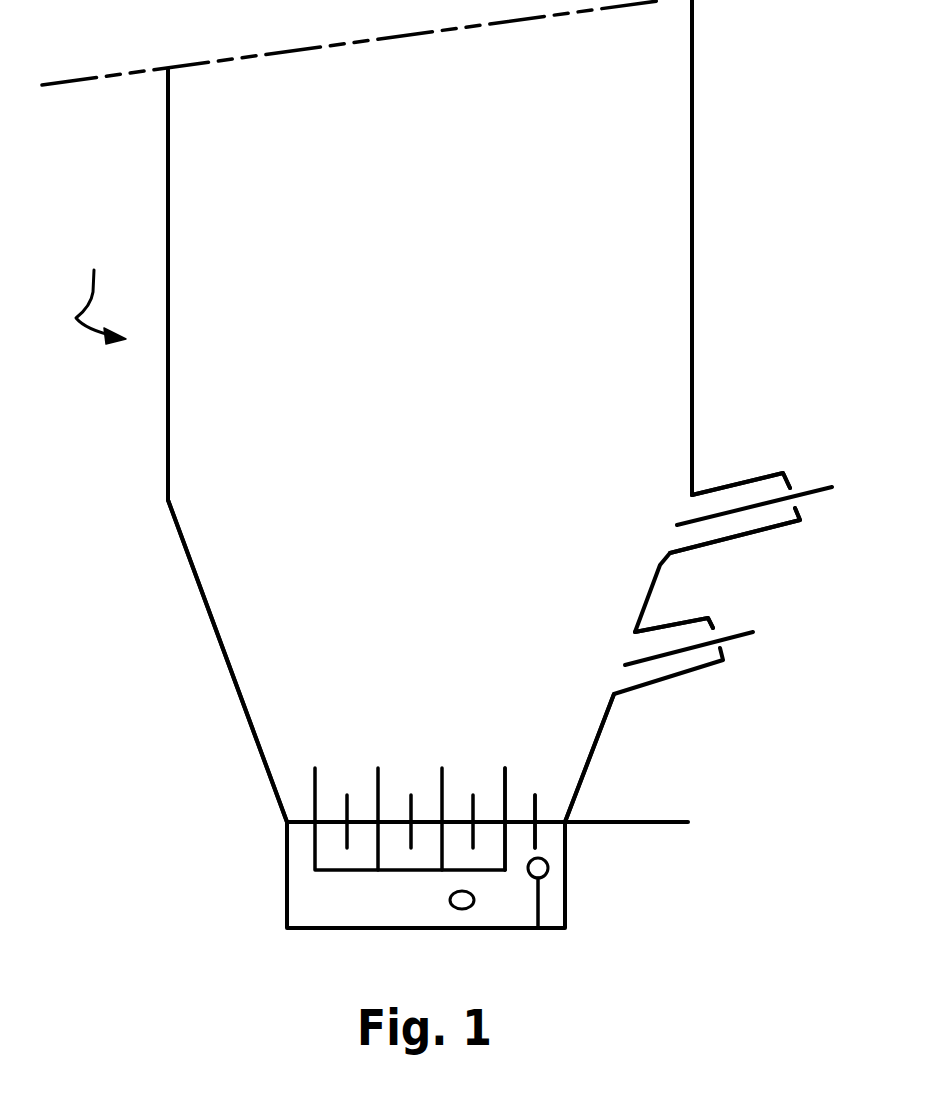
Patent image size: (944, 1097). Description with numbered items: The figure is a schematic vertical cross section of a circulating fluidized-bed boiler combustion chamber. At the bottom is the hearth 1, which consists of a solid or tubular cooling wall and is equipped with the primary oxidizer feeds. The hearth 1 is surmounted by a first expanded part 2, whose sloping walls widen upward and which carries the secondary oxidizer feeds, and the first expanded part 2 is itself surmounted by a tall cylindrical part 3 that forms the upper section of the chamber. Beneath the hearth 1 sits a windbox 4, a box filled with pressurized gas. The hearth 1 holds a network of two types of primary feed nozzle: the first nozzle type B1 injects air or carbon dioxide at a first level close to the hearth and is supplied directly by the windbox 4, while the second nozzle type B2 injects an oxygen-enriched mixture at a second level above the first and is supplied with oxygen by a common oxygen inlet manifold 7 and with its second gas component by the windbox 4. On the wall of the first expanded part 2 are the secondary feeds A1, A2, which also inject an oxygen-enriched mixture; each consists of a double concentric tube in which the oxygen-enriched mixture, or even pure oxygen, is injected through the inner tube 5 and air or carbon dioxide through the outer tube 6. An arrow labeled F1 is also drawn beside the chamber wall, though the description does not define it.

The hearth 1 is at (298, 822).
The first expanded part 2 is at (427, 647).
The cylindrical part 3 is at (430, 322).
The windbox 4 is at (287, 900).
The inner tube 5 is at (813, 487).
The outer tube 6 is at (777, 533).
The common oxygen inlet manifold 7 is at (567, 863).
The secondary feed A1 is at (676, 606).
The secondary feed A2 is at (739, 472).
The first nozzle type B1 is at (540, 806).
The second nozzle type B2 is at (508, 787).
The flow direction F1 is at (101, 291).